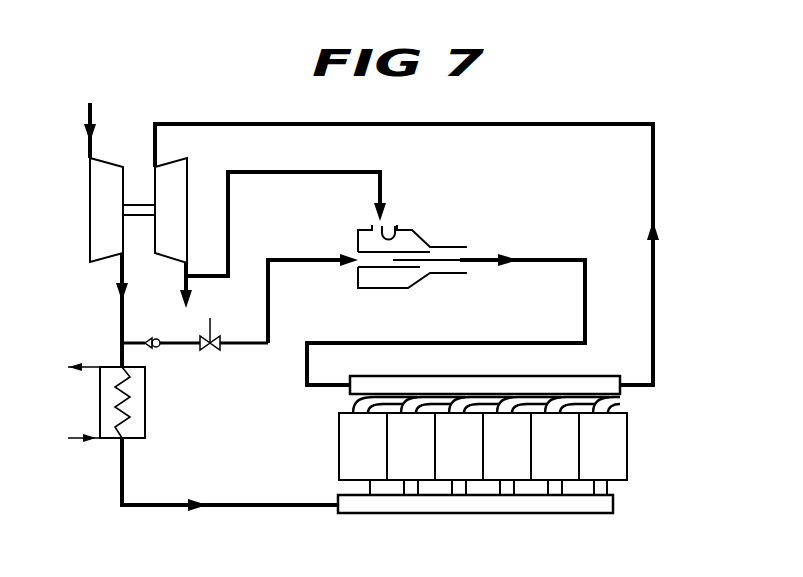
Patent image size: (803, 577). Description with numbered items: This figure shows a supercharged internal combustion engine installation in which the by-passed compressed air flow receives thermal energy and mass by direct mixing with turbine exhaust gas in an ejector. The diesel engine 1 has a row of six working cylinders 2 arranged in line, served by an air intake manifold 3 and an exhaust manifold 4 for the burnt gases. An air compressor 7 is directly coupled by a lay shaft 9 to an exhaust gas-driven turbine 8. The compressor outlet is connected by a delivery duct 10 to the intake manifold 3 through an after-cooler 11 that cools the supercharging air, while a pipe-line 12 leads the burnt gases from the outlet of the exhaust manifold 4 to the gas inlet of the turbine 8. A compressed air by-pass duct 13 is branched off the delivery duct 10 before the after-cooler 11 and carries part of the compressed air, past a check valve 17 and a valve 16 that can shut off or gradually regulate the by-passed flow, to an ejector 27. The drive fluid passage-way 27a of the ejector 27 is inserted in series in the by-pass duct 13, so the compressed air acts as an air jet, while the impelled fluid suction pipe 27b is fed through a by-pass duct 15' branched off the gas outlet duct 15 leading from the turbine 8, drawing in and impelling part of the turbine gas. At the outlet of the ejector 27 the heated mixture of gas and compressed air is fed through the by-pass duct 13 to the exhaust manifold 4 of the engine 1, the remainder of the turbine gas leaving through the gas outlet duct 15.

The diesel engine 1 is at (480, 425).
The working cylinders 2 is at (483, 438).
The air intake manifold 3 is at (613, 507).
The exhaust manifold 4 is at (592, 386).
The air compressor 7 is at (93, 184).
The turbine 8 is at (175, 178).
The lay shaft 9 is at (140, 205).
The delivery duct 10 is at (122, 312).
The after-cooler 11 is at (140, 440).
The pipe-line 12 is at (653, 165).
The compressed air by-pass duct 13 is at (269, 318).
The gas outlet duct 15 is at (167, 285).
The by-pass duct 15' is at (286, 224).
The valve 16 is at (210, 350).
The check valve 17 is at (153, 347).
The ejector 27 is at (434, 236).
The drive fluid passage-way 27a is at (397, 262).
The impelled fluid suction pipe 27b is at (390, 228).